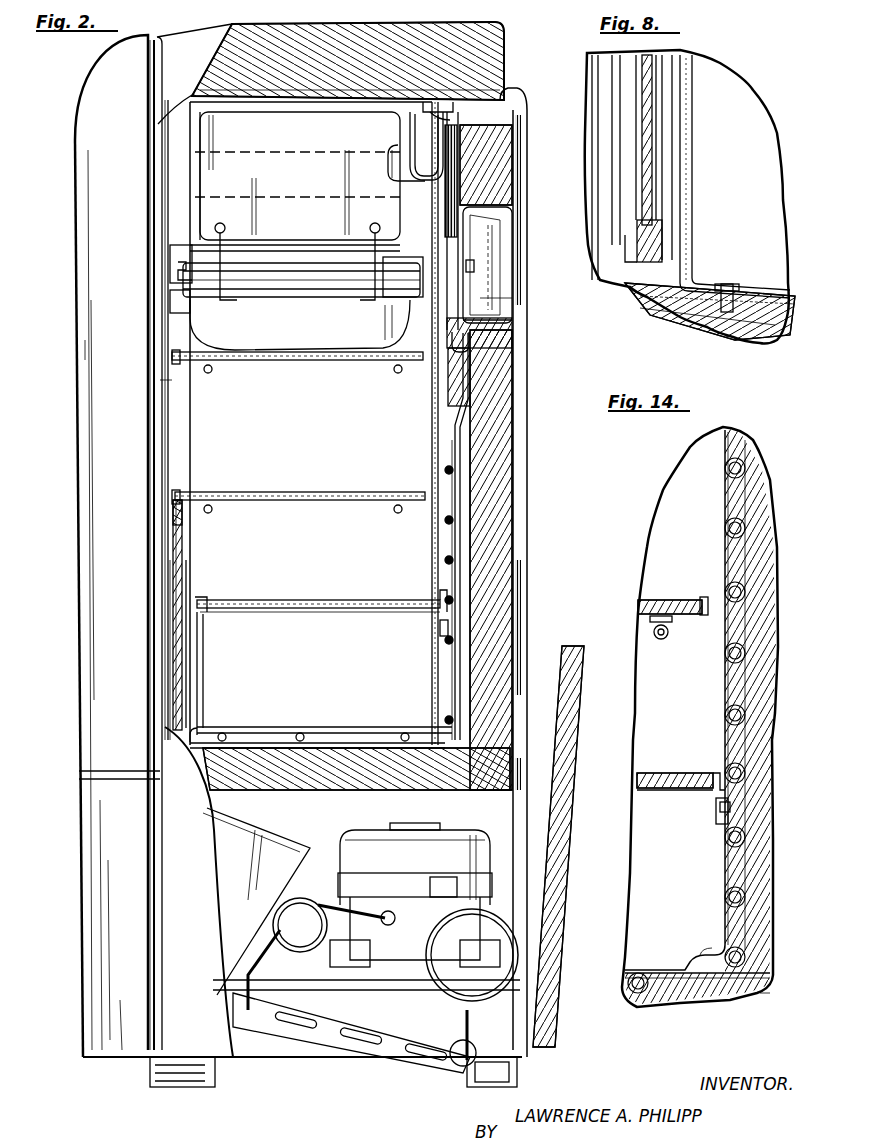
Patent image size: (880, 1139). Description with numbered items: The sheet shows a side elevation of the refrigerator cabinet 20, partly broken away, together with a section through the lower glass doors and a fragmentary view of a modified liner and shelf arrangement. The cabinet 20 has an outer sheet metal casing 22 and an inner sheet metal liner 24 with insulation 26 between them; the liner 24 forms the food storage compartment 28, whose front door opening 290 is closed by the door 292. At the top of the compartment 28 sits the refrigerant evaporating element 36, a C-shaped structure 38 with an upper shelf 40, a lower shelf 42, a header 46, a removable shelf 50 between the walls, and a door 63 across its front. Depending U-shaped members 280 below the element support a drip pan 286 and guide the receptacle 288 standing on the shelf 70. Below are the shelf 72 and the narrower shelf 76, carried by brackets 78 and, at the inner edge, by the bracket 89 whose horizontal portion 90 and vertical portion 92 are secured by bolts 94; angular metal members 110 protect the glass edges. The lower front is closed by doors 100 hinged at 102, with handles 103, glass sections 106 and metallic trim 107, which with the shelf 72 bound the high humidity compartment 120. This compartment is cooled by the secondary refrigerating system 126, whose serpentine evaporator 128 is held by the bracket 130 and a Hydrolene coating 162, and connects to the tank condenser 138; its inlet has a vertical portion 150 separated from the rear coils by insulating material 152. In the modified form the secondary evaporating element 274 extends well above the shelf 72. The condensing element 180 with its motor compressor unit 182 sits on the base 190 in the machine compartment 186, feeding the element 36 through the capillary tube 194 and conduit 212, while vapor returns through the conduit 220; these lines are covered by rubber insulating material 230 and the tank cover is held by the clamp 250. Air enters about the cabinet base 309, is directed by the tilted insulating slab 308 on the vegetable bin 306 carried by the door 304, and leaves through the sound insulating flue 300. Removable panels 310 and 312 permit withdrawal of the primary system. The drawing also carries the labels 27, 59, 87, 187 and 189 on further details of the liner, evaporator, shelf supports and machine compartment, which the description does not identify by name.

In FIG. 2, the cabinet 20 is at (168, 68).
In FIG. 2, the outer sheet metal casing 22 is at (478, 430).
In FIG. 2, the inner sheet metal liner 24 is at (445, 444).
In FIG. 2, the insulation 26 is at (490, 450).
In FIG. 8, the insulation 26 is at (736, 338).
In FIG. 14, the insulation 26 is at (762, 990).
In FIG. 8, the inner liner 27 is at (766, 300).
In FIG. 14, the inner liner 27 is at (722, 490).
In FIG. 2, the food storage compartment 28 is at (190, 425).
In FIG. 14, the food storage compartment 28 is at (686, 555).
In FIG. 2, the refrigerant evaporating element 36 is at (200, 134).
In FIG. 2, the C-shaped structure 38 is at (403, 232).
In FIG. 2, the upper horizontally positioned shelf 40 is at (283, 150).
In FIG. 2, the lower horizontally positioned shelf 42 is at (296, 245).
In FIG. 2, the header 46 is at (403, 200).
In FIG. 2, the removable shelf 50 is at (298, 197).
In FIG. 2, the evaporator side wall 59 is at (205, 168).
In FIG. 2, the door 63 is at (172, 186).
In FIG. 2, the shelf 70 is at (282, 378).
In FIG. 2, the shelf 72 is at (307, 492).
In FIG. 14, the shelf 72 is at (648, 600).
In FIG. 2, the shelf 76 is at (336, 602).
In FIG. 14, the shelf 76 is at (676, 775).
In FIG. 2, the brackets 78 is at (396, 370).
In FIG. 14, the brackets 78 is at (650, 626).
In FIG. 2, the shelf bracket 87 is at (178, 362).
In FIG. 2, the bracket 89 is at (356, 648).
In FIG. 8, the bracket 89 is at (692, 134).
In FIG. 2, the horizontal portion 90 is at (296, 612).
In FIG. 14, the horizontal portion 90 is at (648, 792).
In FIG. 2, the vertical portion 92 is at (205, 672).
In FIG. 8, the vertical portion 92 is at (692, 160).
In FIG. 2, the bolts 94 is at (460, 268).
In FIG. 8, the bolts 94 is at (727, 283).
In FIG. 14, the bolts 94 is at (718, 808).
In FIG. 2, the doors 100 is at (176, 622).
In FIG. 8, the doors 100 is at (660, 125).
In FIG. 2, the hinges 102 is at (168, 672).
In FIG. 8, the hinges 102 is at (625, 75).
In FIG. 2, the handles 103 is at (172, 558).
In FIG. 2, the transparent glass sections 106 is at (182, 538).
In FIG. 8, the transparent glass sections 106 is at (652, 63).
In FIG. 2, the metallic trim 107 is at (175, 510).
In FIG. 8, the metallic trim 107 is at (665, 233).
In FIG. 2, the angular metal members 110 is at (205, 596).
In FIG. 2, the high humidity compartment 120 is at (420, 552).
In FIG. 8, the high humidity compartment 120 is at (765, 148).
In FIG. 14, the high humidity compartment 120 is at (688, 696).
In FIG. 2, the secondary refrigerating system 126 is at (462, 410).
In FIG. 2, the evaporator 128 is at (458, 603).
In FIG. 2, the bracket 130 is at (360, 738).
In FIG. 8, the bracket 130 is at (763, 338).
In FIG. 14, the bracket 130 is at (718, 996).
In FIG. 2, the condenser 138 is at (488, 290).
In FIG. 2, the vertically extending portion 150 is at (465, 560).
In FIG. 2, the insulating material 152 is at (455, 582).
In FIG. 14, the coating of Hydrolene 162 is at (742, 955).
In FIG. 2, the refrigerant liquifying and condensing element 180 is at (410, 828).
In FIG. 2, the motor compressor unit 182 is at (465, 838).
In FIG. 2, the machine compartment 186 is at (293, 965).
In FIG. 2, the mounting plate 187 is at (397, 1048).
In FIG. 2, the base rail 189 is at (366, 965).
In FIG. 2, the base 190 is at (490, 342).
In FIG. 2, the capillary tube 194 is at (458, 128).
In FIG. 2, the conduit 212 is at (418, 118).
In FIG. 2, the vapor return conduit 220 is at (445, 100).
In FIG. 2, the soft rubber insulating material 230 is at (465, 182).
In FIG. 2, the clamp 250 is at (470, 322).
In FIG. 14, the secondary refrigerant evaporating element 274 is at (745, 510).
In FIG. 2, the U-shaped members 280 is at (336, 285).
In FIG. 2, the drip pan 286 is at (322, 300).
In FIG. 2, the receptacle 288 is at (250, 338).
In FIG. 2, the door opening 290 is at (485, 302).
In FIG. 2, the door 292 is at (105, 345).
In FIG. 2, the sound insulating flue 300 is at (582, 773).
In FIG. 2, the door 304 is at (125, 1040).
In FIG. 2, the vegetable bin 306 is at (243, 838).
In FIG. 2, the slab of insulating material 308 is at (297, 845).
In FIG. 2, the cabinet base 309 is at (520, 1075).
In FIG. 2, the removable panel 310 is at (520, 118).
In FIG. 2, the removable panel 312 is at (395, 148).